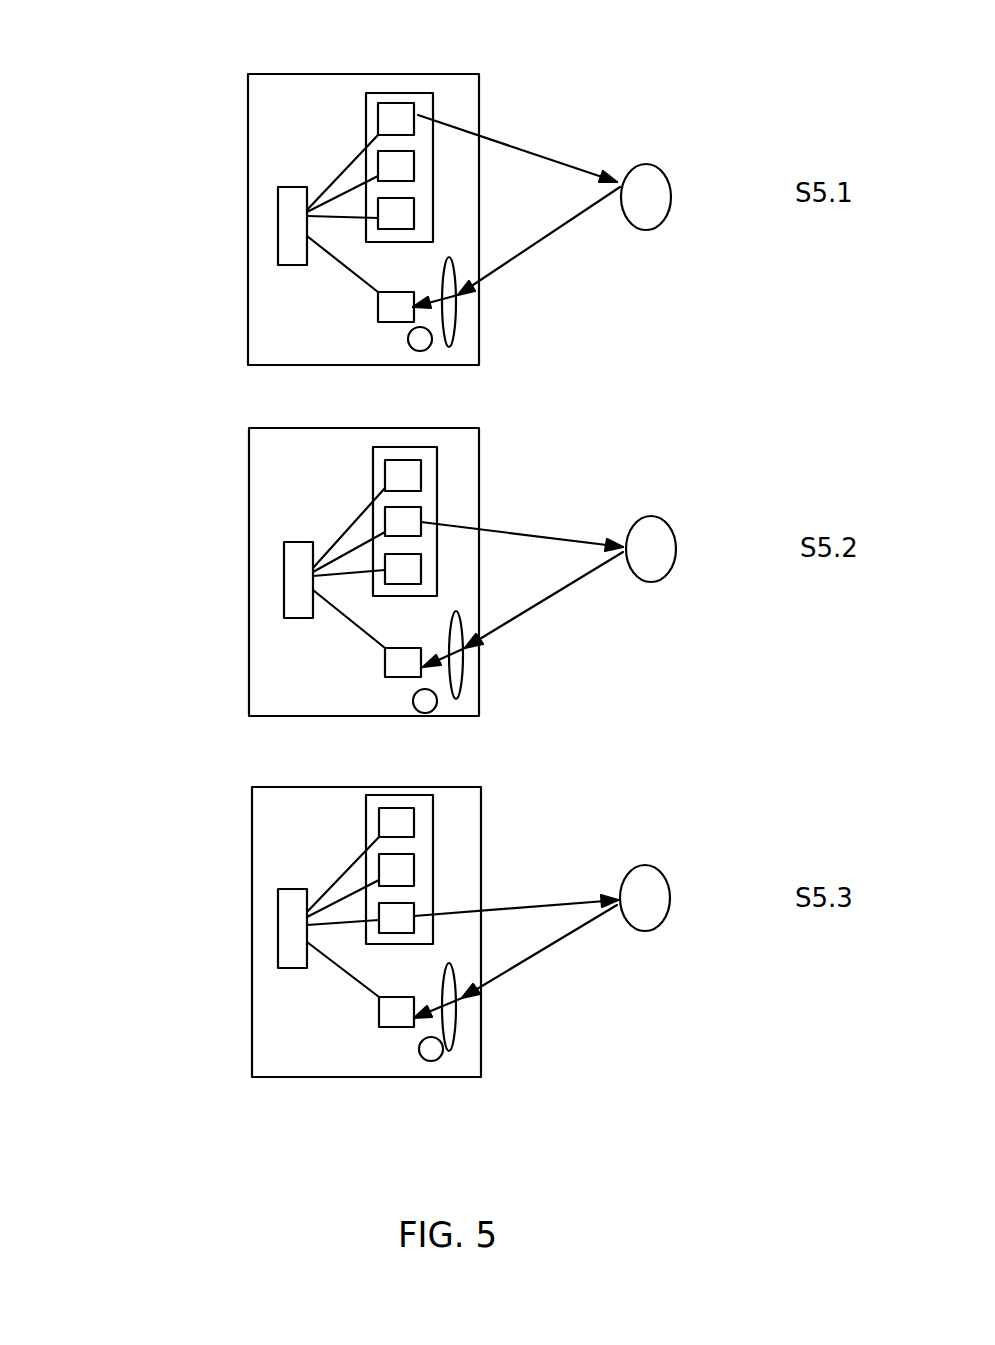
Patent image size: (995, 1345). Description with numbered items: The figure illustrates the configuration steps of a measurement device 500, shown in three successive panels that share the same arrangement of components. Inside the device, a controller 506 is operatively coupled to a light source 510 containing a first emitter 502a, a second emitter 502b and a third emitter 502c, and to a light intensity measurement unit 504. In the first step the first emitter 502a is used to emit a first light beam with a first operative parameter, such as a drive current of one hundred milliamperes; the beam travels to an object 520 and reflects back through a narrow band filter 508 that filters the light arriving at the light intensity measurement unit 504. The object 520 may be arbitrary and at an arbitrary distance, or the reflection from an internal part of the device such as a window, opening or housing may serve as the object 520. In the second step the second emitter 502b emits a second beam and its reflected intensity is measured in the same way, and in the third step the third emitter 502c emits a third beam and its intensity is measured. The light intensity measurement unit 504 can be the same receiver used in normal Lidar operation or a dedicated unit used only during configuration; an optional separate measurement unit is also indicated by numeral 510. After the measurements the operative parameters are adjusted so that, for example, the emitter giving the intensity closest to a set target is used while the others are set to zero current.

The measurement device 500 is at (248, 108).
The first emitter 502a is at (410, 107).
The second emitter 502b is at (410, 163).
The third emitter 502c is at (410, 213).
The light intensity measurement unit 504 is at (383, 310).
The controller 506 is at (297, 228).
The narrow band filter 508 is at (457, 322).
The light source 510 is at (373, 103).
The object 520 is at (657, 200).